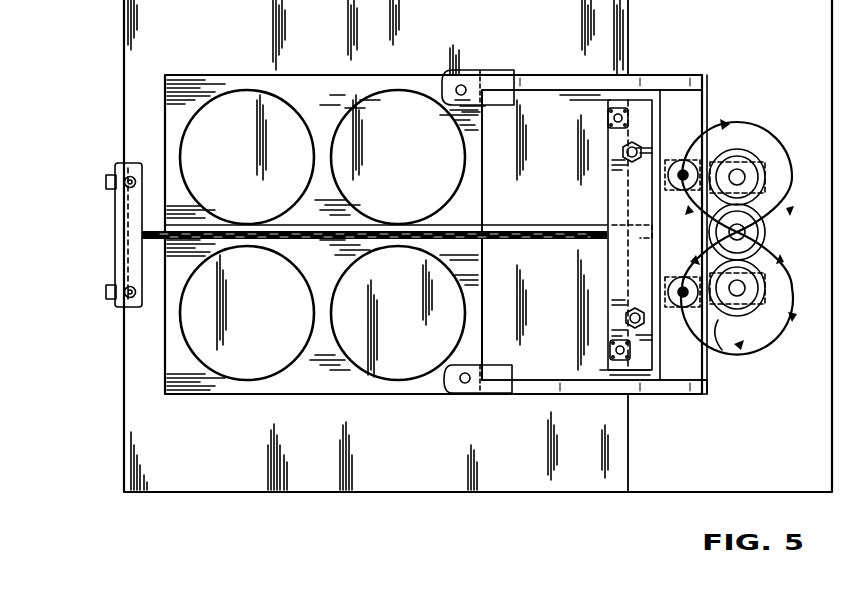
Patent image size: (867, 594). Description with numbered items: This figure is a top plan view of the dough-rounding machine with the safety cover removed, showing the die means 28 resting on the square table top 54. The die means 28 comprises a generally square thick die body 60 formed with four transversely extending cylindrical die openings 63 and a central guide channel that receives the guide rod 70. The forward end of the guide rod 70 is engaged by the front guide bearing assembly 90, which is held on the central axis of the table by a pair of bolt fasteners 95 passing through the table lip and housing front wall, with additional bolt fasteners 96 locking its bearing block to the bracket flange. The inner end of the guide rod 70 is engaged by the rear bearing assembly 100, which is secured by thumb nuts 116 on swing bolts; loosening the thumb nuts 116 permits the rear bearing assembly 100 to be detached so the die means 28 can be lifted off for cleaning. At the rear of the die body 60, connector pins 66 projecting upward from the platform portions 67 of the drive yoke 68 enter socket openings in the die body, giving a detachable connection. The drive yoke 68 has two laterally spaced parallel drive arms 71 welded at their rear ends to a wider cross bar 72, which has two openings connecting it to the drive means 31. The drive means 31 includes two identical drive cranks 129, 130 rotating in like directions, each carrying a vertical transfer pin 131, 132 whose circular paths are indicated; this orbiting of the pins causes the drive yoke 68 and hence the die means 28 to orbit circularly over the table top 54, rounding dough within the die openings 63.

The die means 28 is at (375, 77).
The drive means 31 is at (753, 120).
The table top 54 is at (575, 33).
The die body 60 is at (283, 80).
The die openings 63 is at (332, 208).
The connector pins 66 is at (462, 84).
The platform portions 67 is at (480, 78).
The drive yoke 68 is at (529, 342).
The guide rod 70 is at (518, 229).
The drive arms 71 is at (632, 82).
The cross bar 72 is at (680, 118).
The front guide bearing assembly 90 is at (114, 234).
The bolt fasteners 95 is at (105, 183).
The bolt fasteners 96 is at (120, 302).
The rear bearing assembly 100 is at (605, 163).
The thumb nuts 116 is at (610, 118).
The drive crank 129 is at (722, 350).
The drive crank 130 is at (766, 138).
The transfer pin 131 is at (672, 285).
The transfer pin 132 is at (672, 188).